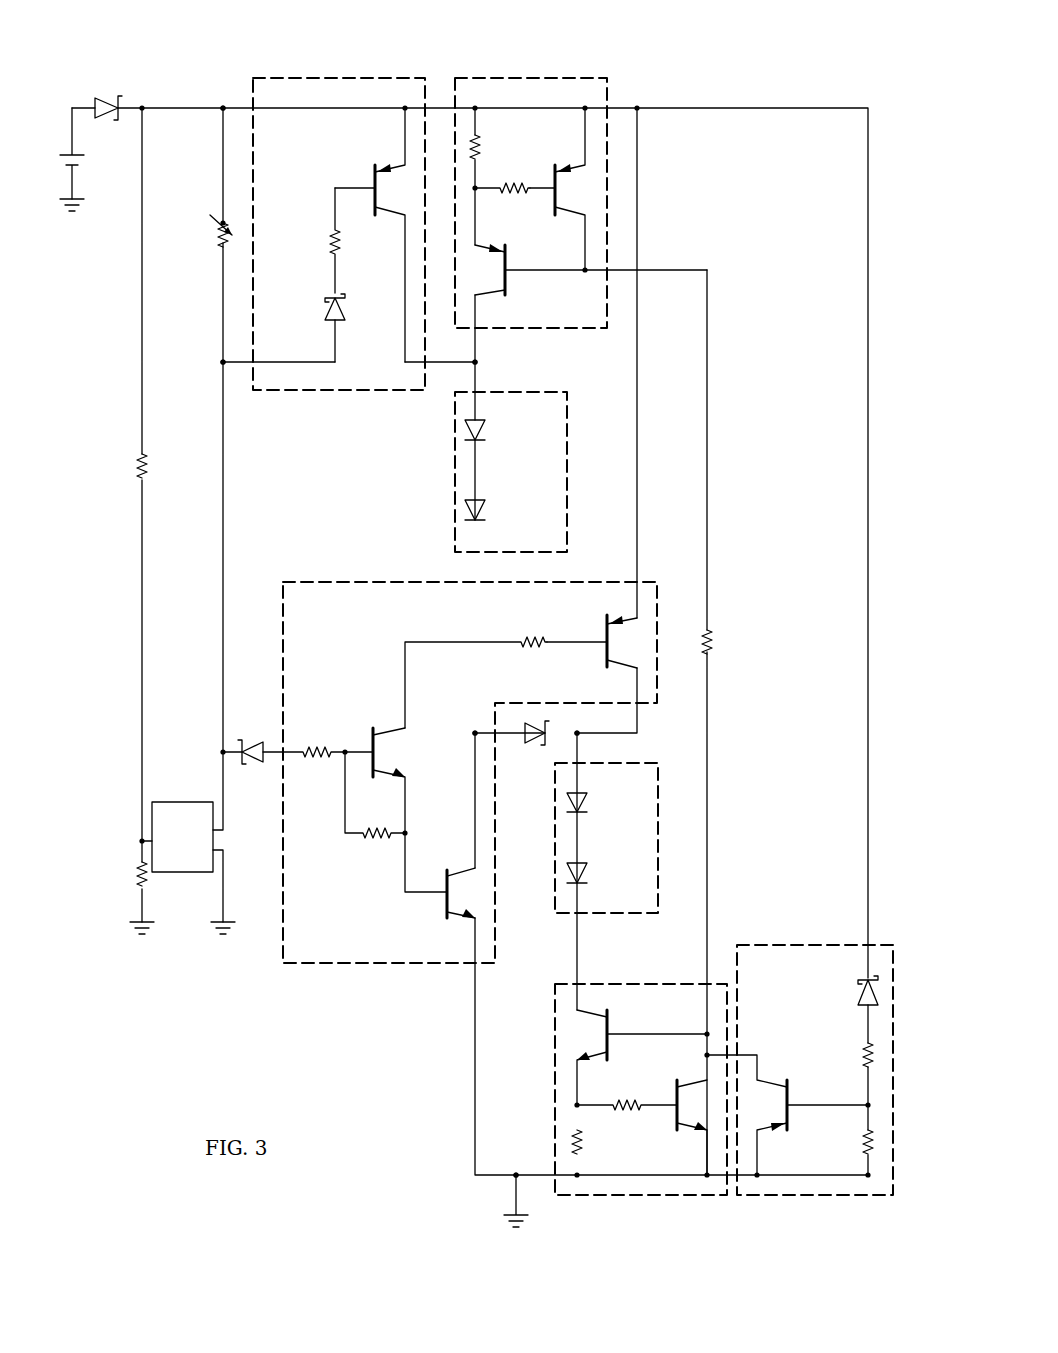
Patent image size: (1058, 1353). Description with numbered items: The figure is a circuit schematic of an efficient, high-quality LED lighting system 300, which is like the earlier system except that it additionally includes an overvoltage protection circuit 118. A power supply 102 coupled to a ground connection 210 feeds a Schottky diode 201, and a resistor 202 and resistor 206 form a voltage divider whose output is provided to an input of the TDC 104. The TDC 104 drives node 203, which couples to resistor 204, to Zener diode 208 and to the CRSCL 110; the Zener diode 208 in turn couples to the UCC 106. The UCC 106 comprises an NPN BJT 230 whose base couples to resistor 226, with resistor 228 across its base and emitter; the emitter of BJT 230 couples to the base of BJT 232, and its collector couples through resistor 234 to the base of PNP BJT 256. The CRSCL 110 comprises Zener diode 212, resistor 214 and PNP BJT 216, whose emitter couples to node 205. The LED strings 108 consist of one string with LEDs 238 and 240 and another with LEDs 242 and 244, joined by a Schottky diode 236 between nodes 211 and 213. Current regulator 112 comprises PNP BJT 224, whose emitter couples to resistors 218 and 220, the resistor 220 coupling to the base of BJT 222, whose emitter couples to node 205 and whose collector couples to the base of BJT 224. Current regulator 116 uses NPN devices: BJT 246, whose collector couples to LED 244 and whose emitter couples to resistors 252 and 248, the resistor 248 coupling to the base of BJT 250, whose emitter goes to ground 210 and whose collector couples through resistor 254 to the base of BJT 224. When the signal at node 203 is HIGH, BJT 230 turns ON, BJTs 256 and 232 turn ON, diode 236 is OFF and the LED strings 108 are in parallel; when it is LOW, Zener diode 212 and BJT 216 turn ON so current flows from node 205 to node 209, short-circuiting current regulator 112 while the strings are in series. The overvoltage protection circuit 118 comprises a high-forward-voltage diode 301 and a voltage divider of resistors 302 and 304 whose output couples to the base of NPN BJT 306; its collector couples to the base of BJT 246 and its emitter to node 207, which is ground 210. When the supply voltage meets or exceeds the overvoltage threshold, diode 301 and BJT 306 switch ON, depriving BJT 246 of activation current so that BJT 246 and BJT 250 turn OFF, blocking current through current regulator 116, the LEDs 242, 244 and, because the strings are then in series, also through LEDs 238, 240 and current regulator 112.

The LED lighting system 300 is at (752, 42).
The Schottky diode 201 is at (110, 98).
The node 205 is at (220, 104).
The power supply 102 is at (86, 162).
The ground connection 210 is at (84, 205).
The resistor 204 is at (218, 228).
The resistor 202 is at (140, 468).
The resistor 206 is at (140, 878).
The TDC 104 is at (177, 837).
The node 203 is at (220, 358).
The node 209 is at (480, 364).
The CRSCL 110 is at (328, 72).
The BJT 216 is at (372, 178).
The resistor 214 is at (330, 242).
The Zener diode 212 is at (327, 306).
The current regulator 112 is at (556, 70).
The resistor 218 is at (482, 148).
The BJT 222 is at (552, 178).
The resistor 220 is at (516, 194).
The BJT 224 is at (508, 284).
The LED strings 108 is at (448, 445).
The LED 238 is at (480, 433).
The LED 240 is at (480, 513).
The UCC 106 is at (360, 972).
The BJT 256 is at (604, 636).
The resistor 234 is at (540, 648).
The BJT 230 is at (370, 742).
The resistor 226 is at (315, 760).
The resistor 228 is at (372, 842).
The BJT 232 is at (443, 908).
The Zener diode 208 is at (252, 766).
The node 211 is at (472, 736).
The Schottky diode 236 is at (533, 746).
The node 213 is at (582, 738).
The LED 242 is at (582, 808).
The LED 244 is at (582, 878).
The resistor 254 is at (712, 642).
The current regulator 116 is at (658, 1208).
The BJT 246 is at (610, 1024).
The resistor 248 is at (628, 1100).
The BJT 250 is at (672, 1118).
The resistor 252 is at (582, 1146).
The overvoltage protection circuit 118 is at (843, 1208).
The diode 301 is at (860, 990).
The resistor 302 is at (864, 1055).
The BJT 306 is at (792, 1118).
The resistor 304 is at (864, 1146).
The node 207 is at (512, 1182).